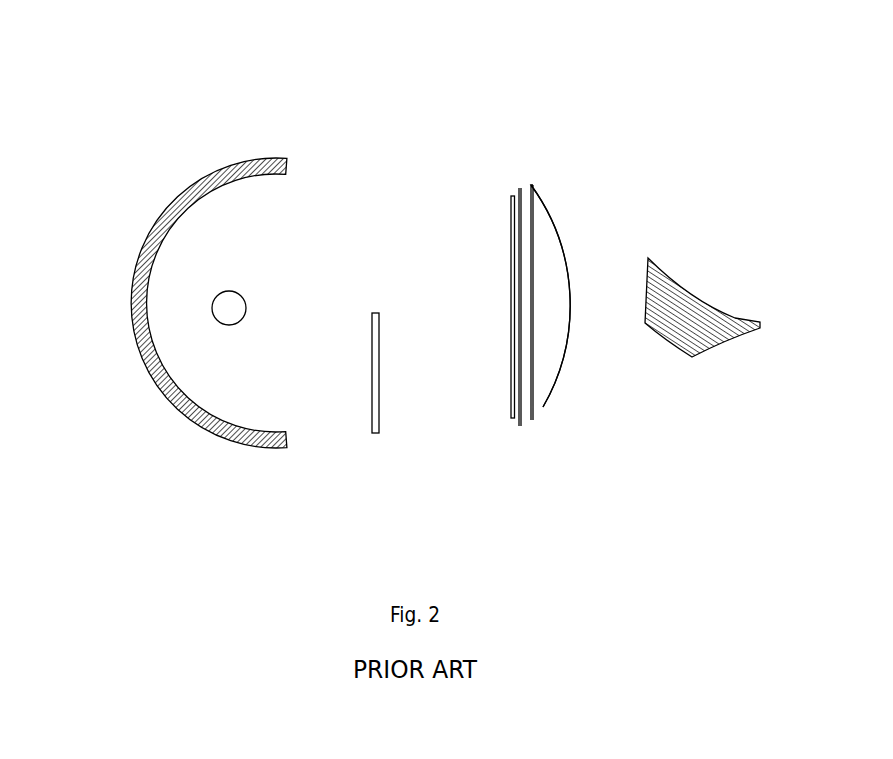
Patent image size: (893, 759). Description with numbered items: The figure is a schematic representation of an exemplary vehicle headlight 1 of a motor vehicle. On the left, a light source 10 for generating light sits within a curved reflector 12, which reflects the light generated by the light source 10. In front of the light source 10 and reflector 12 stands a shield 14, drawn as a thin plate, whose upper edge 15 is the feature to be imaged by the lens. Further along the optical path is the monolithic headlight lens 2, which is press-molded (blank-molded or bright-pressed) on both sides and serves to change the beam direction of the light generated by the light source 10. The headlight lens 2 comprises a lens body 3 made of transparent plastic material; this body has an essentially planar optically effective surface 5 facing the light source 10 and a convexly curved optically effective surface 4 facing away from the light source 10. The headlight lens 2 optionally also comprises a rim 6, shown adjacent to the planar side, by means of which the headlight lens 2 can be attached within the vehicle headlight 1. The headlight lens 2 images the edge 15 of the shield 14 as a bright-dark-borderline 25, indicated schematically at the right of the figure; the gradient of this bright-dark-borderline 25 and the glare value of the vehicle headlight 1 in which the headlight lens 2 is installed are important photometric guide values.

The vehicle headlight 1 is at (498, 97).
The headlight lens 2 is at (530, 185).
The lens body 3 is at (549, 357).
The convexly curved optically effective surface 4 is at (543, 405).
The planar optically effective surface 5 is at (513, 385).
The rim 6 is at (525, 410).
The light source 10 is at (228, 309).
The reflector 12 is at (217, 175).
The shield 14 is at (375, 405).
The edge of the shield 15 is at (375, 313).
The bright-dark-borderline 25 is at (690, 287).